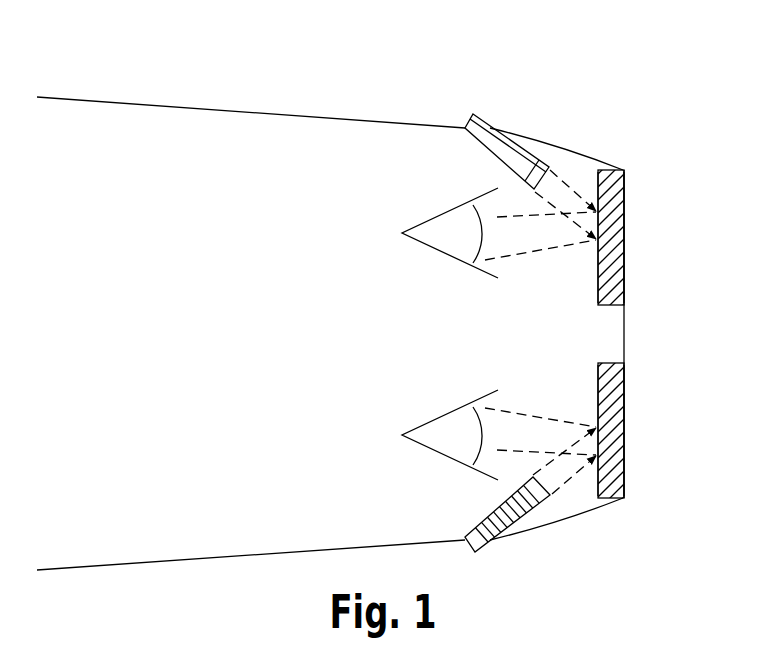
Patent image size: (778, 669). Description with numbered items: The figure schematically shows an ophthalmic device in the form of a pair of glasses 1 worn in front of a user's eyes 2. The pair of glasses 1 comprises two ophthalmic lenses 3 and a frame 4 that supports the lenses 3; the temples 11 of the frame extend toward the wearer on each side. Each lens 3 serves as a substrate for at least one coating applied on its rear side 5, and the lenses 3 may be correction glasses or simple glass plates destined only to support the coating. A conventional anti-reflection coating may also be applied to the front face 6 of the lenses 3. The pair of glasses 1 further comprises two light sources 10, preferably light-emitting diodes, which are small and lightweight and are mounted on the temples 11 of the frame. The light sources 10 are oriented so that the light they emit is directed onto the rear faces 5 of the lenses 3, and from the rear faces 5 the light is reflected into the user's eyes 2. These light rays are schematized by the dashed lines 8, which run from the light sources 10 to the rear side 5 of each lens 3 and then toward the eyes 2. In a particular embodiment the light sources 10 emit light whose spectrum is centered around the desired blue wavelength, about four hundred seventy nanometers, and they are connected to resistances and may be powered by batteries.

The pair of glasses 1 is at (613, 106).
The user's eyes 2 is at (450, 254).
The ophthalmic lenses 3 is at (617, 228).
The frame 4 is at (280, 108).
The rear side of lens 5 is at (598, 277).
The front face of lens 6 is at (625, 268).
The dashed lines (light rays) 8 is at (560, 180).
The light sources (LEDs) 10 is at (487, 127).
The temples 11 is at (111, 103).